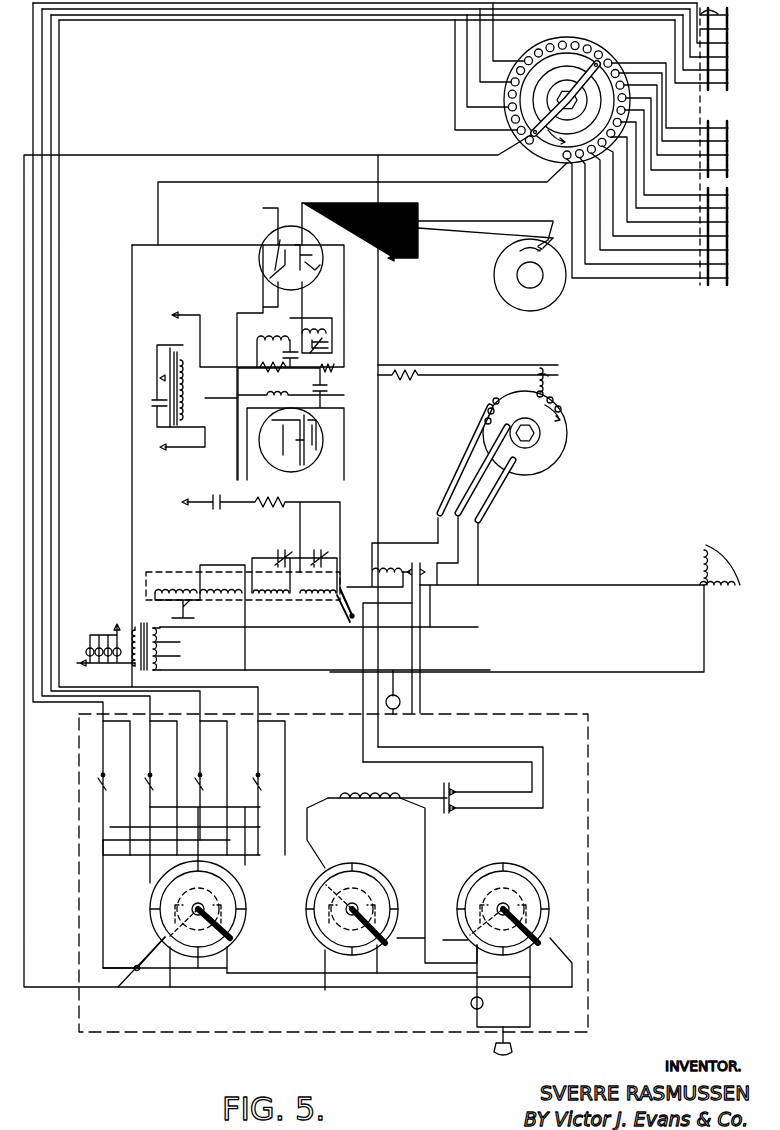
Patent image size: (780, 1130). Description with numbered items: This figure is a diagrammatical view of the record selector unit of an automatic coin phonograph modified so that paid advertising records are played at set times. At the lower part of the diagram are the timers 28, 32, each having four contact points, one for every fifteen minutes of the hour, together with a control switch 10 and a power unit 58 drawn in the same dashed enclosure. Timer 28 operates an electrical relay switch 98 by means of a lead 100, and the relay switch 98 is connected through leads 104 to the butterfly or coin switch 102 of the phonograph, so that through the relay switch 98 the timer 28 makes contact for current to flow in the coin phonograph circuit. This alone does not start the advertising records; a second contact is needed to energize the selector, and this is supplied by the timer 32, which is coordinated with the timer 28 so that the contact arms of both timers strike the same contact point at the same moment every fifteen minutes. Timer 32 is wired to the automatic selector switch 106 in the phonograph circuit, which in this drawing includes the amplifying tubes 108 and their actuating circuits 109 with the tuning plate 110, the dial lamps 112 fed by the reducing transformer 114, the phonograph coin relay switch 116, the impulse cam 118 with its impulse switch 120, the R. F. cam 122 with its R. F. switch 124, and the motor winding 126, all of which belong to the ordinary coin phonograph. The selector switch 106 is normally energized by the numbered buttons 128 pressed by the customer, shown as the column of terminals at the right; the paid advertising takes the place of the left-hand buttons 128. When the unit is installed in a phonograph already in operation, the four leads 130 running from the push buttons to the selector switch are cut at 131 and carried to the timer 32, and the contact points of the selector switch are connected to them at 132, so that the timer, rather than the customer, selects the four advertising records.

The control switch 10 is at (547, 906).
The timer 28 is at (385, 890).
The timer 32 is at (236, 933).
The power supply unit 58 is at (521, 1018).
The electrical relay switch 98 is at (372, 805).
The lead 100 is at (307, 828).
The butterfly or coin switch 102 is at (345, 622).
The leads 104 is at (358, 740).
The automatic selector switch 106 is at (541, 150).
The amplifying tubes 108 is at (322, 270).
The actuating circuits 109 is at (245, 568).
The tuning plate 110 is at (172, 442).
The dial lamps 112 is at (103, 634).
The reducing transformer 114 is at (145, 668).
The phonograph coin relay switch 116 is at (380, 563).
The impulse cam 118 is at (557, 463).
The impulse switch 120 is at (438, 378).
The R. F. cam 122 is at (548, 306).
The R. F. switch 124 is at (486, 222).
The motor winding 126 is at (730, 600).
The numbered buttons 128 is at (728, 60).
The leads 130 is at (259, 22).
The cutting point 131 is at (722, 14).
The connection points 132 is at (455, 9).